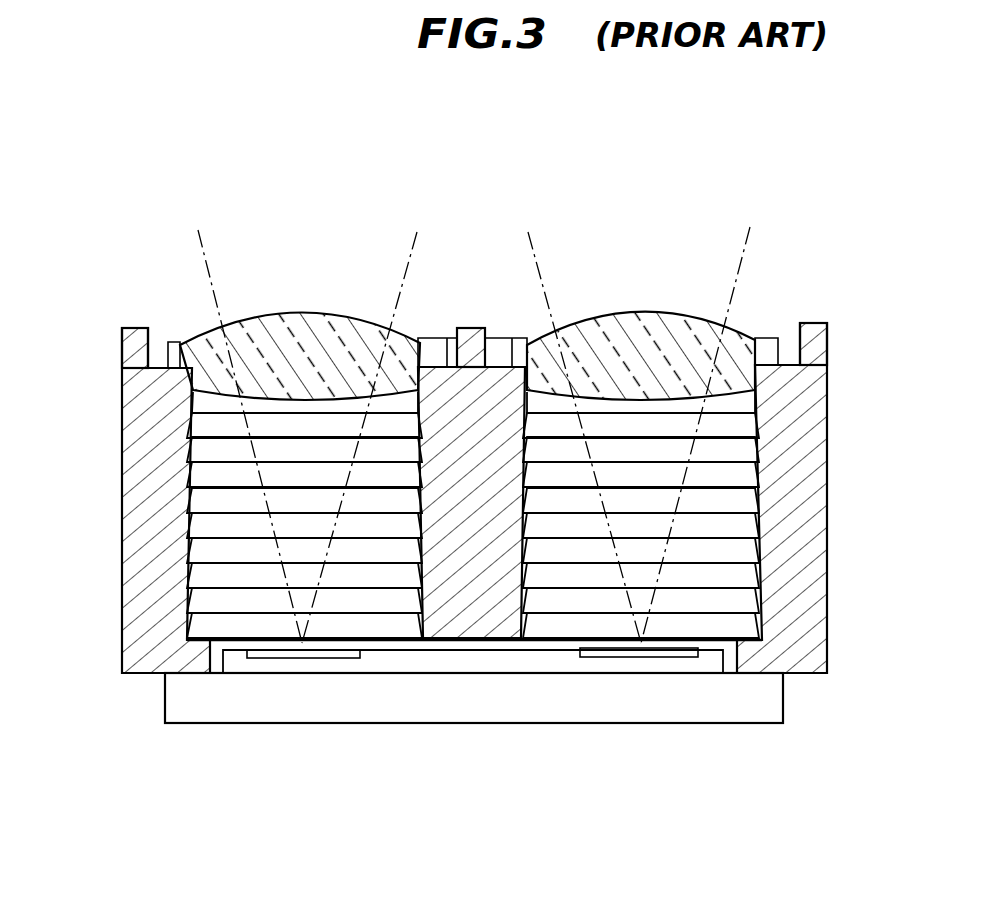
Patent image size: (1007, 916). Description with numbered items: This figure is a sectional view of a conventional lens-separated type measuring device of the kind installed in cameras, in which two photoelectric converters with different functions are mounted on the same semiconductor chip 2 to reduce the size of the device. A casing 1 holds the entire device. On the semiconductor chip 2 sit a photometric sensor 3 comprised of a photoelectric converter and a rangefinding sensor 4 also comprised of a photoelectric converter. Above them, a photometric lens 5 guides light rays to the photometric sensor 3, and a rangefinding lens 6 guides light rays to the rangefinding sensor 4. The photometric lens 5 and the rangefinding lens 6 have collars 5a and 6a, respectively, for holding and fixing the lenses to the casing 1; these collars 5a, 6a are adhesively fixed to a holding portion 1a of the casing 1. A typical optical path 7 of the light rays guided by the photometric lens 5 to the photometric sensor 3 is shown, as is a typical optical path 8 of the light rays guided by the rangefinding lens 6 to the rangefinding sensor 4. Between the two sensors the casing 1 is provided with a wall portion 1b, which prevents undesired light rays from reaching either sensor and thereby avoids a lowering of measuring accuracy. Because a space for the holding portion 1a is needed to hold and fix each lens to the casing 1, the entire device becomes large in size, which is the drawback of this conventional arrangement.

The casing 1 is at (132, 622).
The holding portion 1a is at (175, 350).
The wall portion 1b is at (483, 607).
The semiconductor chip 2 is at (478, 700).
The photometric sensor 3 is at (672, 662).
The rangefinding sensor 4 is at (320, 660).
The photometric lens 5 is at (628, 325).
The collar 5a is at (767, 345).
The rangefinding lens 6 is at (288, 330).
The collar 6a is at (428, 345).
The optical path 7 is at (600, 590).
The optical path 8 is at (330, 520).